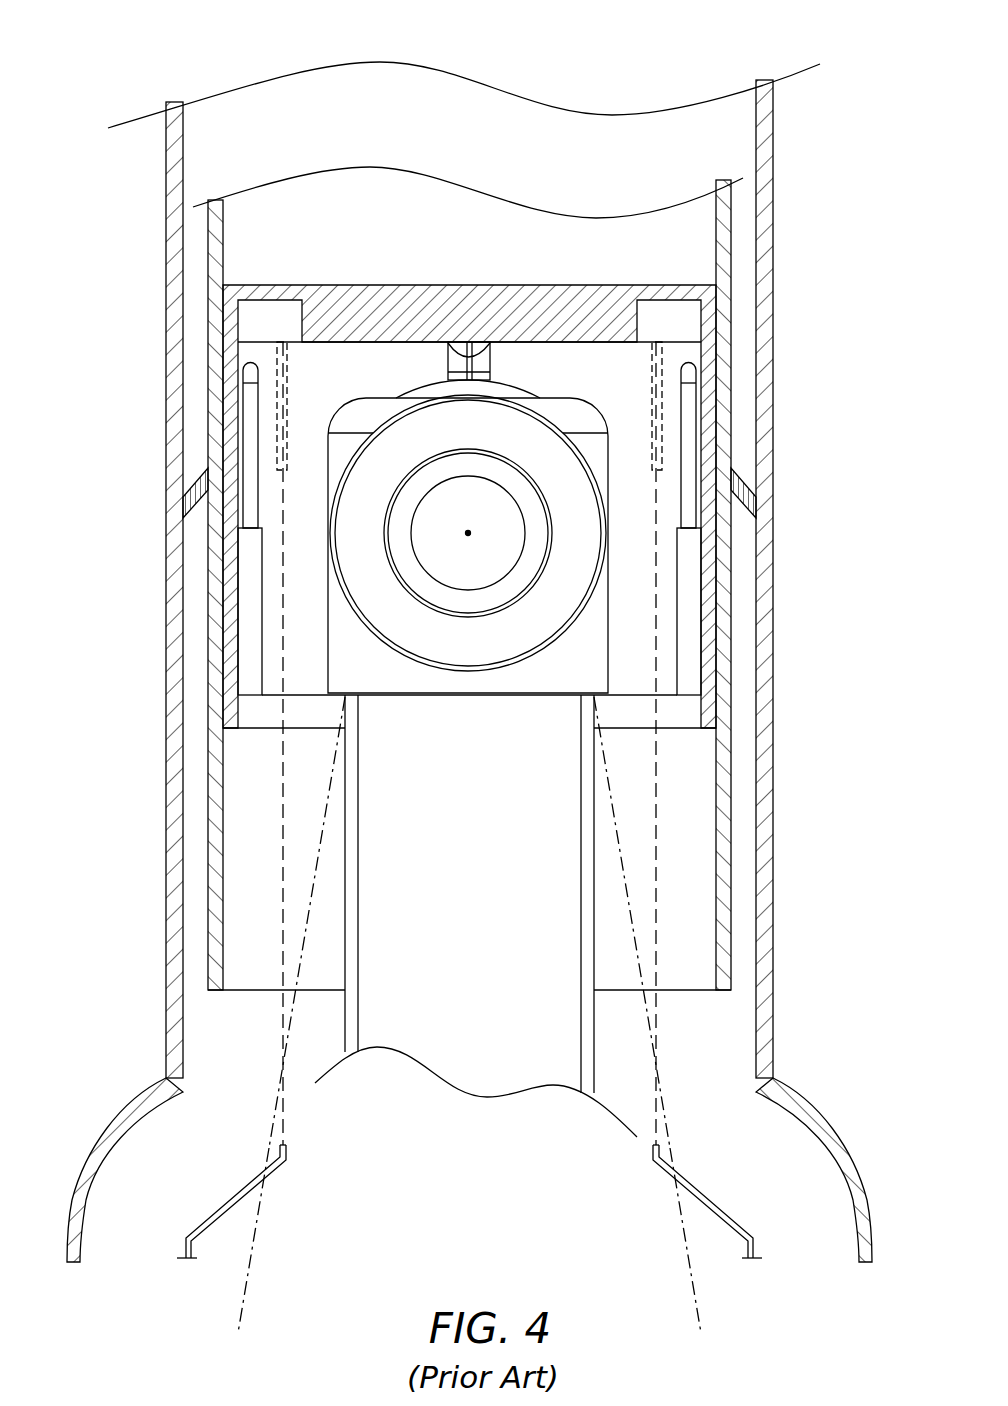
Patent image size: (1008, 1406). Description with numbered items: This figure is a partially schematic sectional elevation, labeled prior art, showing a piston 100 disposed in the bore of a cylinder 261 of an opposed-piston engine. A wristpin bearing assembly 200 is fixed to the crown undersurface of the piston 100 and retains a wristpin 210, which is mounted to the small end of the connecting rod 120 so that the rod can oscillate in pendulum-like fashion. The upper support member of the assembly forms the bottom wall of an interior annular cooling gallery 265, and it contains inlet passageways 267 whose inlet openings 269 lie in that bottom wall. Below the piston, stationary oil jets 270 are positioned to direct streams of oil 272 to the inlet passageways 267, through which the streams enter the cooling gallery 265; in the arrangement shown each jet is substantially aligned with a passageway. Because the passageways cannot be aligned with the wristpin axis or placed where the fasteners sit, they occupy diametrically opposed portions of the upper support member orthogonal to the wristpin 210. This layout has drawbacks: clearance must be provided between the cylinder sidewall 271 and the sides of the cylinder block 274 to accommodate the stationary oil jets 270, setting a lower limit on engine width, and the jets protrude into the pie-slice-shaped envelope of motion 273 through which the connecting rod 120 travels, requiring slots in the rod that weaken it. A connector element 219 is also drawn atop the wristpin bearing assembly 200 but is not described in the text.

The piston 100 is at (466, 262).
The connecting rod 120 is at (343, 1000).
The wristpin bearing assembly 200 is at (628, 697).
The wristpin 210 is at (468, 647).
The connector 219 is at (554, 380).
The cylinder 261 is at (354, 136).
The interior annular cooling gallery 265 is at (258, 322).
The inlet passageways 267 is at (284, 386).
The inlet openings 269 is at (300, 336).
The stationary oil jets 270 is at (273, 1170).
The cylinder sidewall 271 is at (208, 736).
The streams of oil 272 is at (283, 1118).
The envelope of motion 273 is at (252, 1258).
The cylinder block 274 is at (80, 1150).